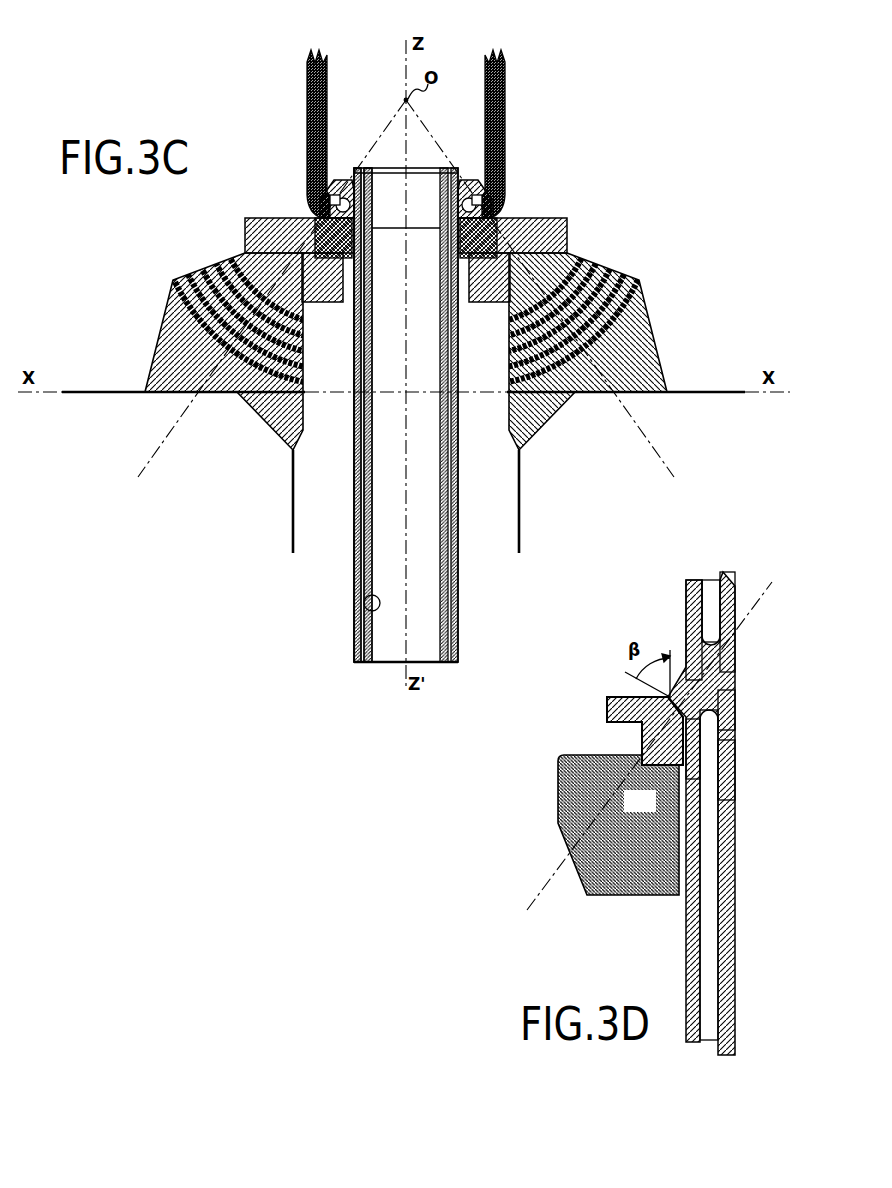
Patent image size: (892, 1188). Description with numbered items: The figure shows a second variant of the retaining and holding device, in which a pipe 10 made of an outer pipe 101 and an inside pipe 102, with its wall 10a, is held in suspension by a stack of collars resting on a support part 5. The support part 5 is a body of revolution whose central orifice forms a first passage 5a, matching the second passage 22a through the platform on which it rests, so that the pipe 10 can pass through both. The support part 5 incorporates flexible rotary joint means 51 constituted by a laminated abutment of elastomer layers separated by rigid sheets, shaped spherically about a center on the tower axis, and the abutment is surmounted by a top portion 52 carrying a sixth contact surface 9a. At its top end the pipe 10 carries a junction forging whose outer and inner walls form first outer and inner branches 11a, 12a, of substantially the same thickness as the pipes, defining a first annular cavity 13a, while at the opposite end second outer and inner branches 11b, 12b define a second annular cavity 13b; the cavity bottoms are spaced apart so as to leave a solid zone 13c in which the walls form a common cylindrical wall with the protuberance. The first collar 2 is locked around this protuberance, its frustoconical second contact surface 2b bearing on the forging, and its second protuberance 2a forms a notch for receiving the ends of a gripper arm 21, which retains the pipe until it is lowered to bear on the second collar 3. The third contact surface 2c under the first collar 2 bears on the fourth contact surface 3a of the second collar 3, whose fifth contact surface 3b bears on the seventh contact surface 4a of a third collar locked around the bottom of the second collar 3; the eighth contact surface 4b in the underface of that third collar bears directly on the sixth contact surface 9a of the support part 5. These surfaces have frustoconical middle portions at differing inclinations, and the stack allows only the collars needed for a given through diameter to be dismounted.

In FIG. 3C, the first collar 2 is at (350, 180).
In FIG. 3D, the first collar 2 is at (566, 668).
In FIG. 3D, the second protuberance 2a is at (655, 705).
In FIG. 3D, the second contact surface 2b is at (640, 735).
In FIG. 3C, the third contact surface 2c is at (318, 205).
In FIG. 3D, the third contact surface 2c is at (640, 748).
In FIG. 3D, the second collar 3 is at (604, 841).
In FIG. 3C, the fourth contact surface 3a is at (363, 186).
In FIG. 3D, the fourth contact surface 3a is at (618, 841).
In FIG. 3C, the fifth contact surface 3b is at (406, 292).
In FIG. 3D, the fifth contact surface 3b is at (578, 908).
In FIG. 3C, the seventh contact surface 4a is at (406, 292).
In FIG. 3C, the eighth contact surface 4b is at (362, 238).
In FIG. 3C, the support part 5 is at (383, 232).
In FIG. 3C, the first passage 5a is at (340, 362).
In FIG. 3C, the flexible rotary joint means 51 is at (406, 203).
In FIG. 3C, the top portion 52 is at (406, 203).
In FIG. 3C, the sixth contact surface 9a is at (245, 240).
In FIG. 3C, the pipe 10 is at (450, 415).
In FIG. 3C, the tube wall 10a is at (432, 580).
In FIG. 3D, the tube wall 10a is at (709, 813).
In FIG. 3C, the outer pipe 101 is at (354, 630).
In FIG. 3D, the outer pipe 101 is at (709, 813).
In FIG. 3C, the inside pipe 102 is at (364, 595).
In FIG. 3D, the inside pipe 102 is at (686, 946).
In FIG. 3D, the first outer branch 11a is at (700, 738).
In FIG. 3D, the second outer branch 11b is at (686, 598).
In FIG. 3D, the first inner branch 12a is at (735, 776).
In FIG. 3D, the second inner branch 12b is at (735, 596).
In FIG. 3D, the first annular cavity 13a is at (722, 740).
In FIG. 3D, the second annular cavity 13b is at (711, 580).
In FIG. 3D, the solid zone 13c is at (735, 694).
In FIG. 3C, the gripper arm 21 is at (307, 117).
In FIG. 3C, the second passage 22a is at (344, 517).